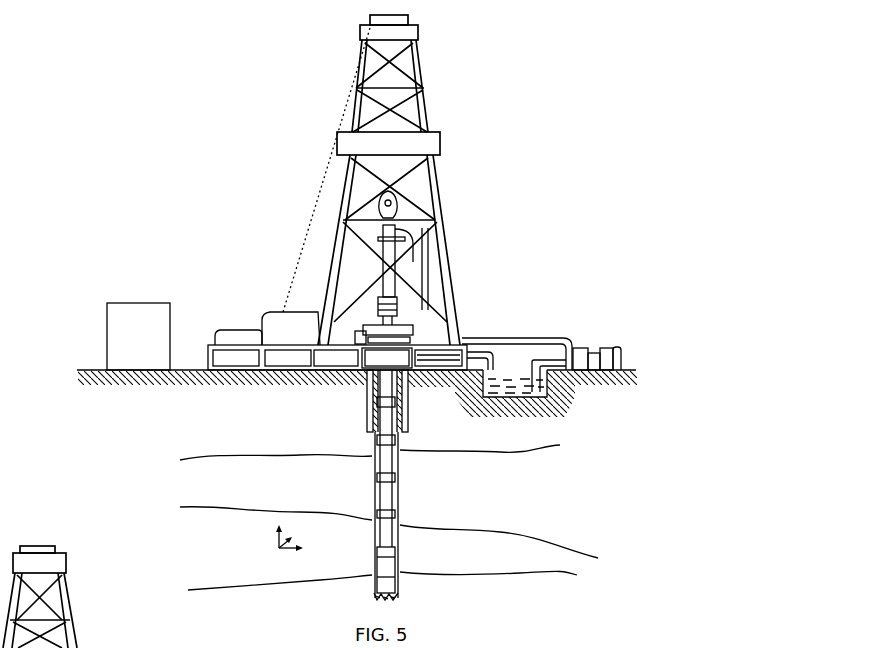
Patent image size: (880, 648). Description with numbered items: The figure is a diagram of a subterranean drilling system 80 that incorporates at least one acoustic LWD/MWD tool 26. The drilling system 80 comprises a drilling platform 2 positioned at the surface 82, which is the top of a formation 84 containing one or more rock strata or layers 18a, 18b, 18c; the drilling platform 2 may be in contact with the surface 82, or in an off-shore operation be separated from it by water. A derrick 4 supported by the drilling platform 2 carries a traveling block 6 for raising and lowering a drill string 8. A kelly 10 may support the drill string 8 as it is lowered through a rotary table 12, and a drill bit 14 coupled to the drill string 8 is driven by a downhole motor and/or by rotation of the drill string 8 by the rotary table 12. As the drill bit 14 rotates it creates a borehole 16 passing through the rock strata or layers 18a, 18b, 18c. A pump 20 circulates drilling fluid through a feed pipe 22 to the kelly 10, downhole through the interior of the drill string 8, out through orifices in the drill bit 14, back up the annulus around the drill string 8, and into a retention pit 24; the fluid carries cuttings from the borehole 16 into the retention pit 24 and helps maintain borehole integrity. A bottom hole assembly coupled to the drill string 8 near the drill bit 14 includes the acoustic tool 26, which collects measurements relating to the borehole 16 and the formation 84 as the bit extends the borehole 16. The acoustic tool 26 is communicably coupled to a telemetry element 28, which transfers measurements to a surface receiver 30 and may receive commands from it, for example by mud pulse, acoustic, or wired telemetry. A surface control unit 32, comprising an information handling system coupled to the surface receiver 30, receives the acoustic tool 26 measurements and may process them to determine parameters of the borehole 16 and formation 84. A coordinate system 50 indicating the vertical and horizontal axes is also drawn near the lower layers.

The drilling platform 2 is at (208, 352).
The derrick 4 is at (434, 105).
The traveling block 6 is at (393, 199).
The drill string 8 is at (400, 446).
The kelly 10 is at (400, 250).
The rotary table 12 is at (412, 328).
The drill bit 14 is at (398, 598).
The borehole 16 is at (402, 466).
The rock strata or layers 18a is at (212, 540).
The rock strata or layers 18b is at (276, 487).
The rock strata or layers 18c is at (546, 442).
The pump 20 is at (576, 350).
The feed pipe 22 is at (508, 338).
The retention pit 24 is at (527, 406).
The acoustic LWD/MWD tool 26 is at (377, 567).
The telemetry element 28 is at (398, 551).
The surface receiver 30 is at (398, 300).
The surface control unit 32 is at (151, 343).
The coordinate system 50 is at (270, 547).
The subterranean drilling system 80 is at (524, 151).
The surface 82 is at (91, 370).
The formation 84 is at (132, 433).